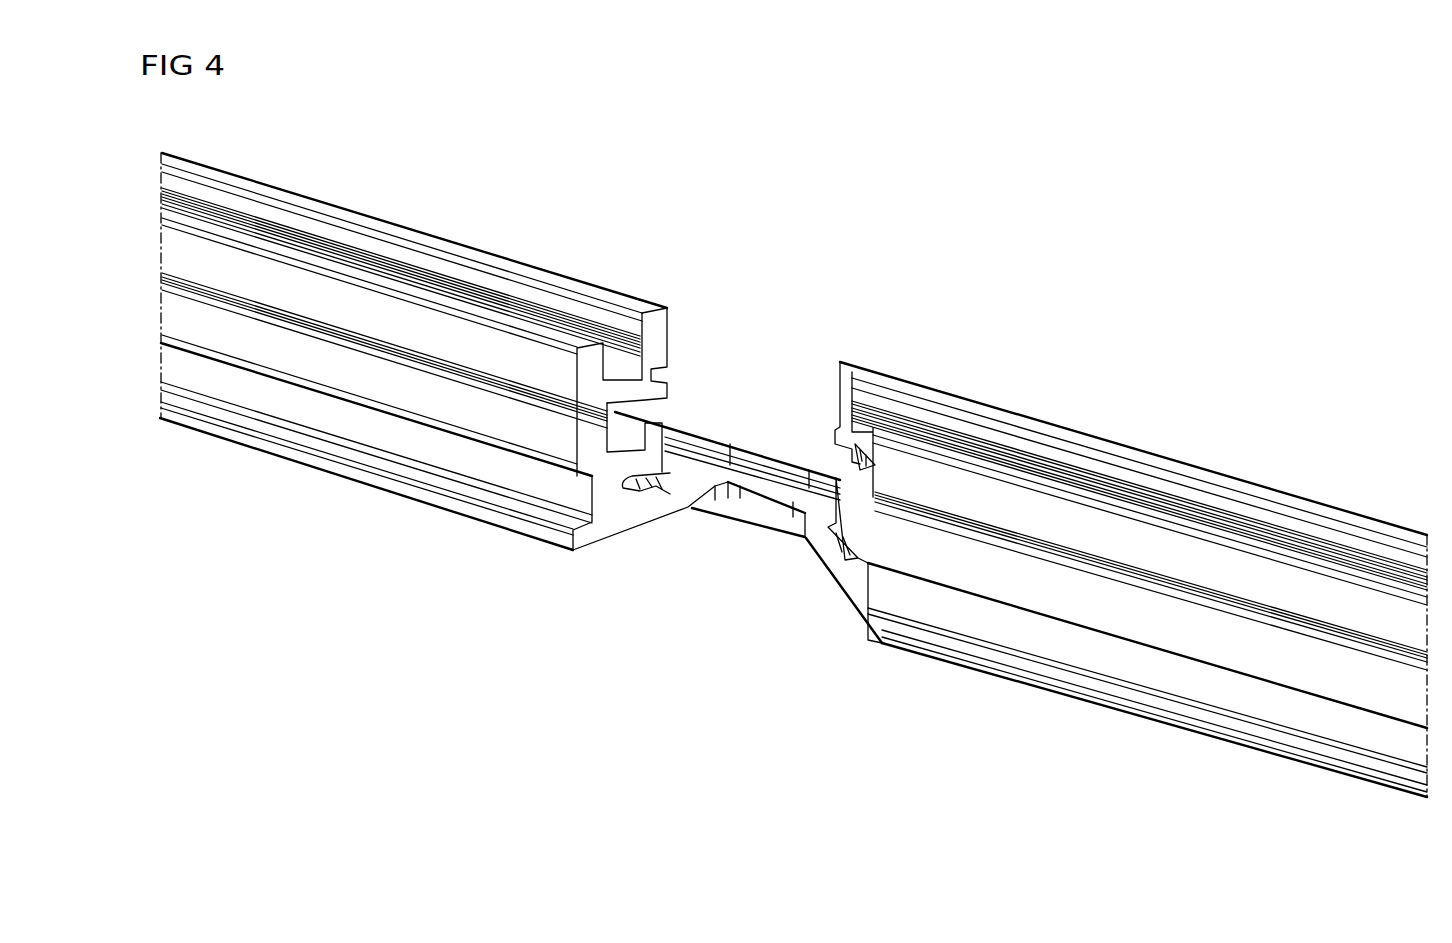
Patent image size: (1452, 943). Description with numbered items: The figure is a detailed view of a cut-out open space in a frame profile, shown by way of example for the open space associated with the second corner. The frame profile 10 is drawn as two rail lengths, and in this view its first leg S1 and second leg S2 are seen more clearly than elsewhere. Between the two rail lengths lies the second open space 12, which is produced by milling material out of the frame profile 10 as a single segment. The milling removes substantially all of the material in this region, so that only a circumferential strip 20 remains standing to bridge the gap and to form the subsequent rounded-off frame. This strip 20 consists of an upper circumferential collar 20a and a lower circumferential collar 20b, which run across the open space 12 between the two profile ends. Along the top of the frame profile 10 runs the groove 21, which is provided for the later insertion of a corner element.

The frame profile 10 is at (471, 238).
The second open space 12 is at (688, 568).
The circumferential strip 20 is at (708, 411).
The upper circumferential collar 20a is at (762, 528).
The lower circumferential collar 20b is at (773, 452).
The groove 21 is at (572, 305).
The first leg S1 is at (358, 488).
The second leg S2 is at (339, 217).